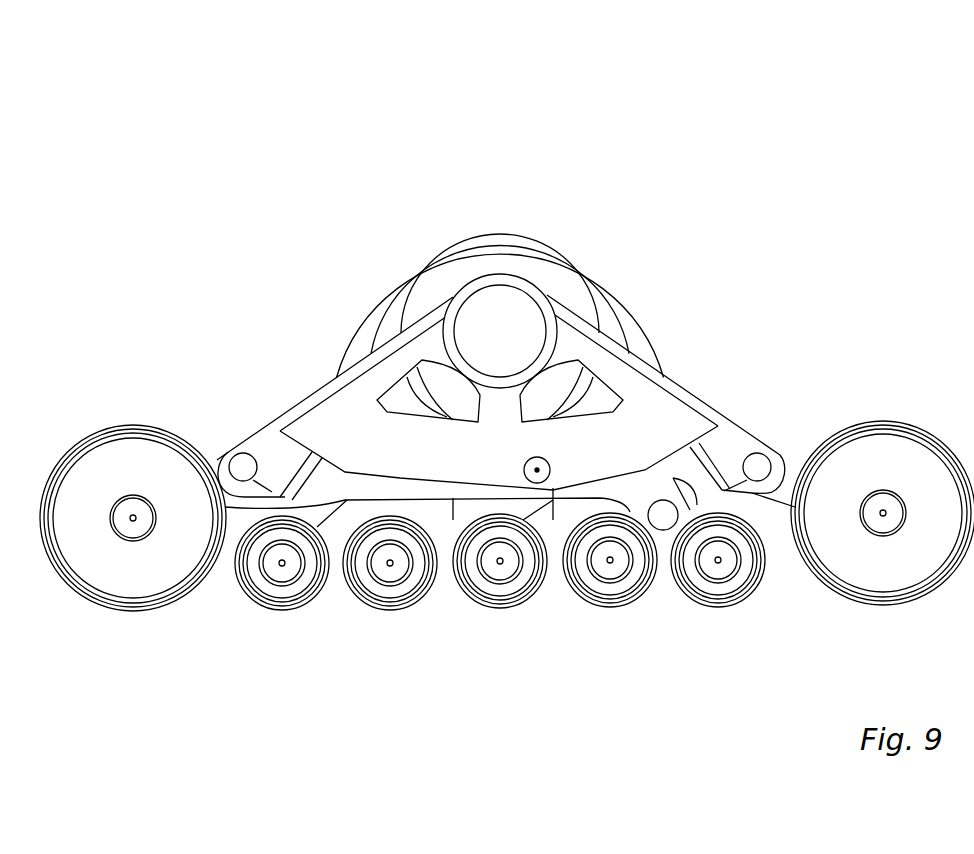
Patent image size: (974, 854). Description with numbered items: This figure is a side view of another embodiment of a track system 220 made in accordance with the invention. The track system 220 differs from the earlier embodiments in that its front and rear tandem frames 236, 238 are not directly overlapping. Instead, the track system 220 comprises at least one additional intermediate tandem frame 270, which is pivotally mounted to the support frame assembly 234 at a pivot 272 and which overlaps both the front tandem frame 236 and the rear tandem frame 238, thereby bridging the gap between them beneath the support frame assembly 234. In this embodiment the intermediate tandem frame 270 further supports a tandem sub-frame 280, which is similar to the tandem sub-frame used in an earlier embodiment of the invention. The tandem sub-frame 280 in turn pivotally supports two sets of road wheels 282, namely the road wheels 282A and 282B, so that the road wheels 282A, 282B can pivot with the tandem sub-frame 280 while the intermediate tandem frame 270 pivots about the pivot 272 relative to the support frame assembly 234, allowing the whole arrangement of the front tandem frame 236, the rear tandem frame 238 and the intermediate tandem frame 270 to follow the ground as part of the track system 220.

The track system 220 is at (832, 98).
The support frame assembly 234 is at (664, 397).
The front tandem frame 236 is at (217, 463).
The rear tandem frame 238 is at (788, 460).
The intermediate tandem frame 270 is at (463, 490).
The pivot 272 is at (537, 470).
The tandem sub-frame 280 is at (663, 530).
The road wheels 282 is at (588, 750).
The road wheel 282A is at (642, 598).
The road wheel 282B is at (737, 598).